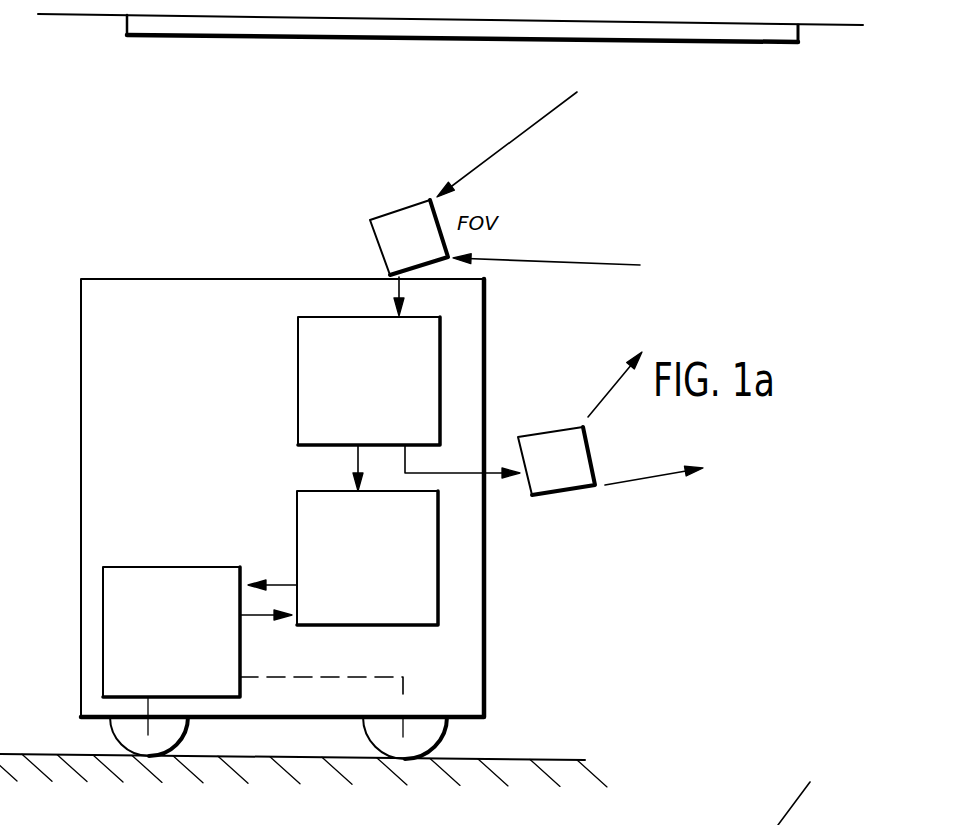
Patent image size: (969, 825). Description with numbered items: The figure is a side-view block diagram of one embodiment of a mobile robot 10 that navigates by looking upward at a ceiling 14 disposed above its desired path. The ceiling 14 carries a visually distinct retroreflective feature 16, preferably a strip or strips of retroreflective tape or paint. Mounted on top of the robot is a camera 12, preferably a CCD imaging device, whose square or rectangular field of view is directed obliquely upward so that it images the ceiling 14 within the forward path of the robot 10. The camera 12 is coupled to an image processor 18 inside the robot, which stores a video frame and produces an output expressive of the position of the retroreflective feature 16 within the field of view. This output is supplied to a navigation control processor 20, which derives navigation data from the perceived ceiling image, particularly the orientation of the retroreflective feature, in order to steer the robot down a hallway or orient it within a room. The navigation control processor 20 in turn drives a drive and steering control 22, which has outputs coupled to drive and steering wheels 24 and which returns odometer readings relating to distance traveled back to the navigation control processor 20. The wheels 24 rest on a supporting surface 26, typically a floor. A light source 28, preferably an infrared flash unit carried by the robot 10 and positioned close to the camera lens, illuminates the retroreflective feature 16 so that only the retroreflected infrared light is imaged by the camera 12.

The mobile robot 10 is at (164, 262).
The camera 12 is at (392, 208).
The ceiling 14 is at (92, 16).
The retroreflective feature 16 is at (650, 43).
The image processor 18 is at (298, 364).
The navigation control processor 20 is at (297, 510).
The drive and steering control 22 is at (131, 565).
The drive and steering wheels 24 is at (110, 732).
The supporting surface 26 is at (31, 752).
The light source 28 is at (540, 497).